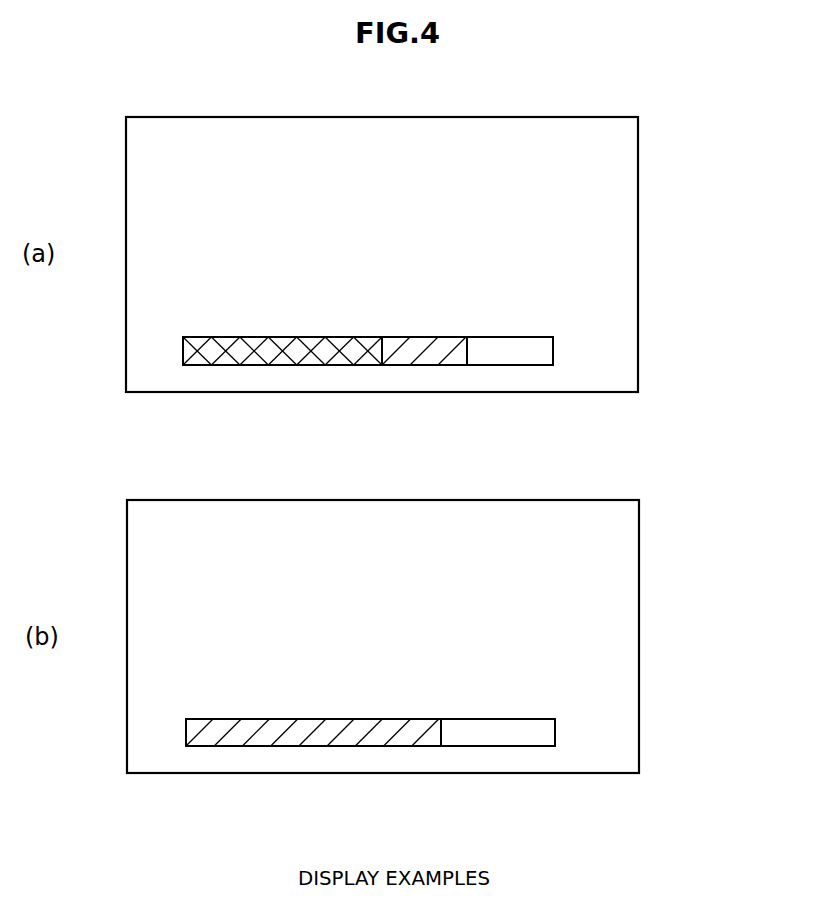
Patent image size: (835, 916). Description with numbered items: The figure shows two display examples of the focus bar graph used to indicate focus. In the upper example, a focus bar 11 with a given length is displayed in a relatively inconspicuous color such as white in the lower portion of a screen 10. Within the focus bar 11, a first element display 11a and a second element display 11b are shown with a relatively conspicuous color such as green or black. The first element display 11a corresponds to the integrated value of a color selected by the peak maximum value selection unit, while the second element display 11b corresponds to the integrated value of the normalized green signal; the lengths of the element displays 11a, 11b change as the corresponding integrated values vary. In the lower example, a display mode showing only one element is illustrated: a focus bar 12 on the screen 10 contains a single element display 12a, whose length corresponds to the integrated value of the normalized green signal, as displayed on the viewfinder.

The screen 10 is at (638, 152).
The focus bar 11 is at (485, 331).
The first element display 11a is at (380, 322).
The second element display 11b is at (467, 322).
The focus bar 12 is at (488, 713).
The element display 12a is at (440, 703).